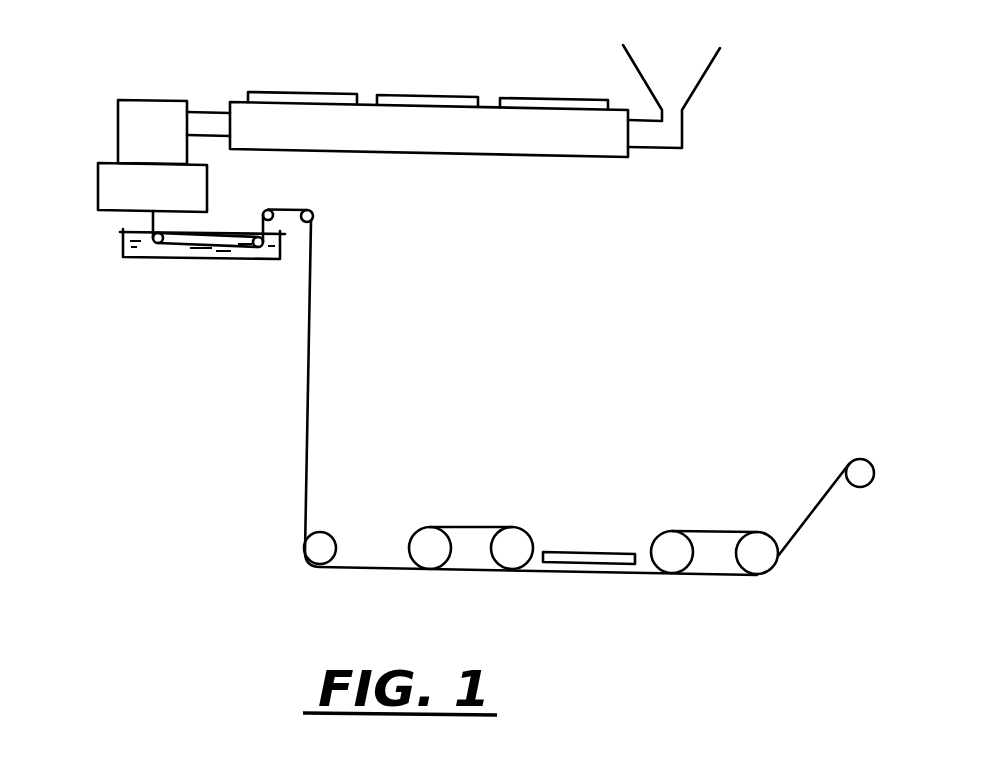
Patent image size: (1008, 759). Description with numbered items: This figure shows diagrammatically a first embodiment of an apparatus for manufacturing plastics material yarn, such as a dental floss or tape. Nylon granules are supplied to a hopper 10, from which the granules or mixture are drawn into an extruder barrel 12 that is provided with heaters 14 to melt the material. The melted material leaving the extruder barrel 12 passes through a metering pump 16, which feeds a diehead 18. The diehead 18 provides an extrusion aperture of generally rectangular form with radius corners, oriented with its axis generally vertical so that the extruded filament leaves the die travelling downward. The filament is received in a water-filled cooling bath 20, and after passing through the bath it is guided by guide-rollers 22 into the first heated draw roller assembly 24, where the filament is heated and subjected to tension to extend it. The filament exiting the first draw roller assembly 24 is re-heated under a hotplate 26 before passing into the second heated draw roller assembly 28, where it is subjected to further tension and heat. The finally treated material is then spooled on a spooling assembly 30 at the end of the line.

The hopper 10 is at (687, 73).
The extruder barrel 12 is at (443, 138).
The heaters 14 is at (302, 93).
The metering pump 16 is at (153, 113).
The diehead 18 is at (133, 190).
The cooling bath 20 is at (183, 252).
The guide-rollers 22 is at (300, 205).
The first draw roller assembly 24 is at (462, 522).
The hotplate 26 is at (587, 553).
The second heated draw roller assembly 28 is at (695, 527).
The spooling assembly 30 is at (863, 478).